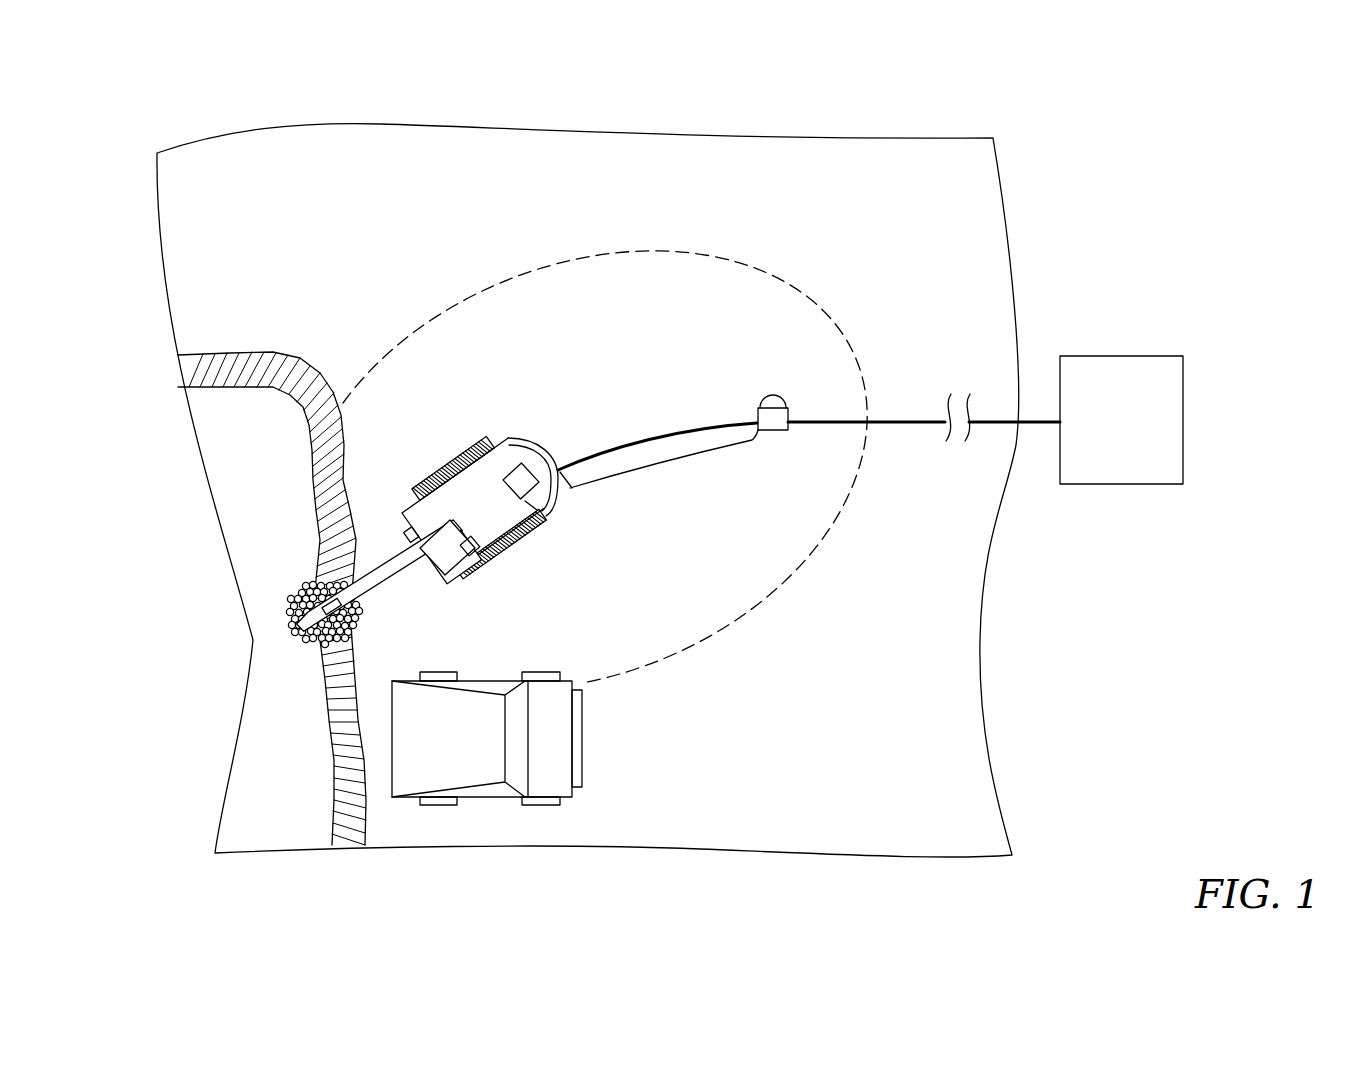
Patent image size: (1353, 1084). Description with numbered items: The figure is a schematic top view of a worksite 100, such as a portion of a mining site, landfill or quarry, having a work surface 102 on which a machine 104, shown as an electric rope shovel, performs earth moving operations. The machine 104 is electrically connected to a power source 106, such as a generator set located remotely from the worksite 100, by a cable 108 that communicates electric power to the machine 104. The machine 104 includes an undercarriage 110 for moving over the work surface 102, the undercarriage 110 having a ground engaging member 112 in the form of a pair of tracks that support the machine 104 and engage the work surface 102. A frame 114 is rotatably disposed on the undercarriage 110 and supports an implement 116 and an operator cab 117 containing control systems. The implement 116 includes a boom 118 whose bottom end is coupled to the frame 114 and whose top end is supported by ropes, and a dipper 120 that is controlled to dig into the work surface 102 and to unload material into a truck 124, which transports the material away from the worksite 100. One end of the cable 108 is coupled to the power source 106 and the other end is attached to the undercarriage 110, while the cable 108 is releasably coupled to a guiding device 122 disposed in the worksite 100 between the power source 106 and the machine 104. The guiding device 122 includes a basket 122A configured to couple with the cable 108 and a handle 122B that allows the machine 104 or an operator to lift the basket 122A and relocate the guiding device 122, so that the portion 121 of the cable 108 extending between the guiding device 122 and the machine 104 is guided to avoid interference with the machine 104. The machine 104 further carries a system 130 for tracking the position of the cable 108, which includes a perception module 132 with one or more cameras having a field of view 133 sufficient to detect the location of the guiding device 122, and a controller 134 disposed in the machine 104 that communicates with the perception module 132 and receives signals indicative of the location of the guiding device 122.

The worksite 100 is at (1141, 130).
The work surface 102 is at (896, 214).
The machine 104 is at (468, 499).
The power source 106 is at (1103, 432).
The cable 108 is at (886, 420).
The undercarriage 110 is at (501, 543).
The ground engaging member 112 is at (501, 543).
The frame 114 is at (508, 437).
The implement 116 is at (378, 570).
The operator cab 117 is at (465, 560).
The boom 118 is at (368, 572).
The dipper 120 is at (290, 642).
The portion of the cable 121 is at (670, 465).
The guiding device 122 is at (800, 392).
The basket 122A is at (775, 431).
The handle 122B is at (789, 400).
The truck 124 is at (583, 738).
The system 130 is at (453, 468).
The perception module 132 is at (553, 510).
The field of view 133 is at (746, 262).
The controller 134 is at (471, 565).